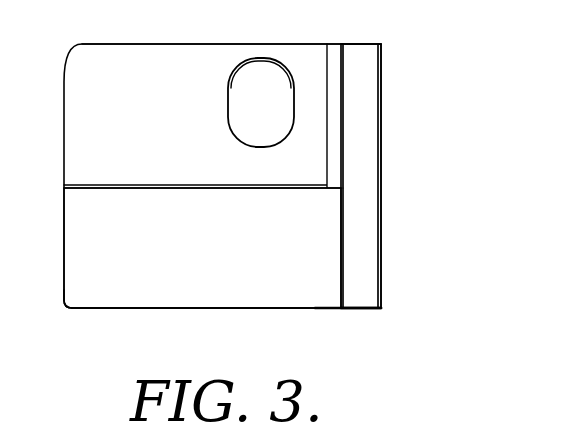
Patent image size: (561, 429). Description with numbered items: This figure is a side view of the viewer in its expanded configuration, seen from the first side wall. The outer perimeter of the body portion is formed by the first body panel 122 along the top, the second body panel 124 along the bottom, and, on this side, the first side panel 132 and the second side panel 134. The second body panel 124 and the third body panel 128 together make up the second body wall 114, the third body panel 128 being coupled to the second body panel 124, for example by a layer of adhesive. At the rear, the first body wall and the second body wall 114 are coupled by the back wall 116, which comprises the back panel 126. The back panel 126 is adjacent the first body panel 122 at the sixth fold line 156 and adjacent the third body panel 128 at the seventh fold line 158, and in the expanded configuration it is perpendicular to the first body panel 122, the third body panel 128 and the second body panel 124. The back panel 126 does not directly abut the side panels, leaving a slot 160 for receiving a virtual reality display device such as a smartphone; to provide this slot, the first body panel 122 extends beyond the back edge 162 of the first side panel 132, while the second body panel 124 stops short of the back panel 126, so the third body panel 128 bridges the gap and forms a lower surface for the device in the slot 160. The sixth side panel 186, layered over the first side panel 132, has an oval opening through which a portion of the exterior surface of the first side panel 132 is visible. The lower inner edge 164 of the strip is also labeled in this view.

The second body wall 114 is at (195, 321).
The back wall 116 is at (404, 229).
The first body panel 122 is at (172, 44).
The second body panel 124 is at (113, 309).
The back panel 126 is at (382, 162).
The third body panel 128 is at (322, 309).
The first side panel 132 is at (265, 95).
The second side panel 134 is at (170, 253).
The sixth fold line 156 is at (380, 44).
The seventh fold line 158 is at (382, 308).
The slot 160 is at (360, 118).
The back edge 162 is at (350, 60).
The lower inner edge 164 is at (353, 276).
The sixth side panel 186 is at (173, 138).